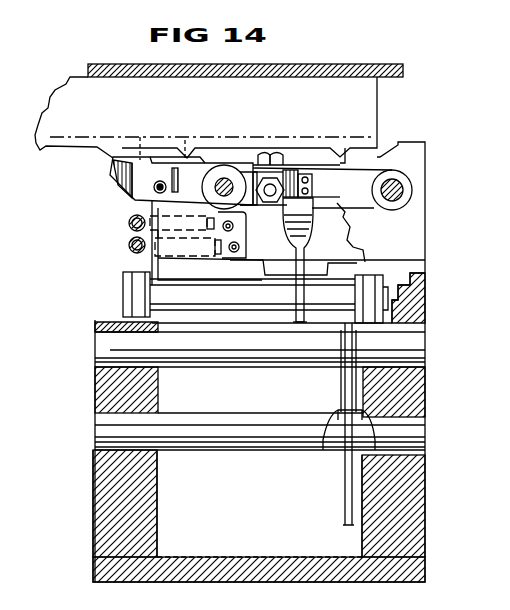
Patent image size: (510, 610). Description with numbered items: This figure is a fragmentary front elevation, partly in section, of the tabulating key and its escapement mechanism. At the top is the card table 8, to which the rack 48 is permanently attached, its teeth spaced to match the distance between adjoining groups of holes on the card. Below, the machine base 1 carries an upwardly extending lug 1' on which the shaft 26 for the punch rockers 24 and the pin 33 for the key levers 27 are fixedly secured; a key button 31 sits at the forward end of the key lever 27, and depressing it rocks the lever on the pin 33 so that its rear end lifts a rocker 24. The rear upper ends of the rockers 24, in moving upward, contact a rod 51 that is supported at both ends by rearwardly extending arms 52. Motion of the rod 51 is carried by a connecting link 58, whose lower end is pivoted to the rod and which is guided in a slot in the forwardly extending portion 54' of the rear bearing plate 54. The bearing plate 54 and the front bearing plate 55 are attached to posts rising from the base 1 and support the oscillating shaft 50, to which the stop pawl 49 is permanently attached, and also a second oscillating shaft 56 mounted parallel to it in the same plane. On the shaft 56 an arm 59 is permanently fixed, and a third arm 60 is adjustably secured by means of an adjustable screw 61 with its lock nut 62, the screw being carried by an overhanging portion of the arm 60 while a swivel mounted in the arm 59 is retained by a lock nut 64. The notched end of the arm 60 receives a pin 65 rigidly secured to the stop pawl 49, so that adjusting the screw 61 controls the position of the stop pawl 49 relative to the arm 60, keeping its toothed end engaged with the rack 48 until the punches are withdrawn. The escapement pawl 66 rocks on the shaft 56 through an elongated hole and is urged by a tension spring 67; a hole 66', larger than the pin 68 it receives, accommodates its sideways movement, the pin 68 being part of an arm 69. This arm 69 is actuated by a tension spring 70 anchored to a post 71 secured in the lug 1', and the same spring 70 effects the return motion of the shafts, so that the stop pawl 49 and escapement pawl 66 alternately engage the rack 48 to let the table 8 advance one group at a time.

The card table 8 is at (393, 68).
The rack 48 is at (73, 143).
The bearing plate 55 is at (418, 235).
The oscillating shaft 50 is at (402, 190).
The bearing plate 54 is at (330, 201).
The forwardly extending portion of bearing plate 54' is at (276, 301).
The stop pawl 49 is at (340, 207).
The rod 51 is at (280, 275).
The arms 52 is at (130, 282).
The shaft 26 is at (102, 346).
The pin 33 is at (102, 428).
The lug 1' is at (258, 516).
The base 1 is at (259, 509).
The key lever 27 is at (345, 486).
The punch rocker 24 is at (345, 378).
The key button 31 is at (335, 418).
The connecting link 58 is at (302, 263).
The arm 59 is at (260, 203).
The lock nut 64 is at (271, 207).
The adjustable screw 61 is at (265, 154).
The lock nut 62 is at (276, 153).
The arm 60 is at (292, 172).
The pin 65 is at (306, 176).
The oscillating shaft 56 is at (224, 180).
The escapement pawl 66 is at (168, 181).
The hole 66' is at (132, 156).
The pin 68 is at (160, 184).
The tension spring 67 is at (128, 224).
The post 71 is at (128, 246).
The tension spring 70 is at (158, 248).
The arm 69 is at (222, 258).